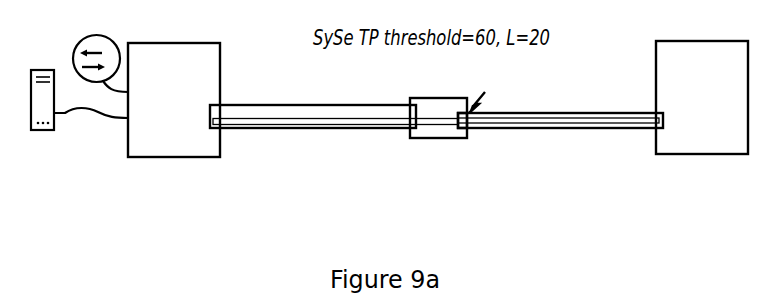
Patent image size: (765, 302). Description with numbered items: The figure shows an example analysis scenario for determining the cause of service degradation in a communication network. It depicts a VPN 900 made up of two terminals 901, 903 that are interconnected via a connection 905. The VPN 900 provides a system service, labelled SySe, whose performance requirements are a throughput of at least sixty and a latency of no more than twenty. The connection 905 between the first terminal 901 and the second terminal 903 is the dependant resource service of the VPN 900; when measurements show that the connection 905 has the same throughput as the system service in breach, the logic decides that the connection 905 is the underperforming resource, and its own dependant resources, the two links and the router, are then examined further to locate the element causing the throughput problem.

The VPN 900 is at (181, 213).
The terminal 901 is at (143, 157).
The terminal 903 is at (722, 155).
The connection 905 is at (450, 138).